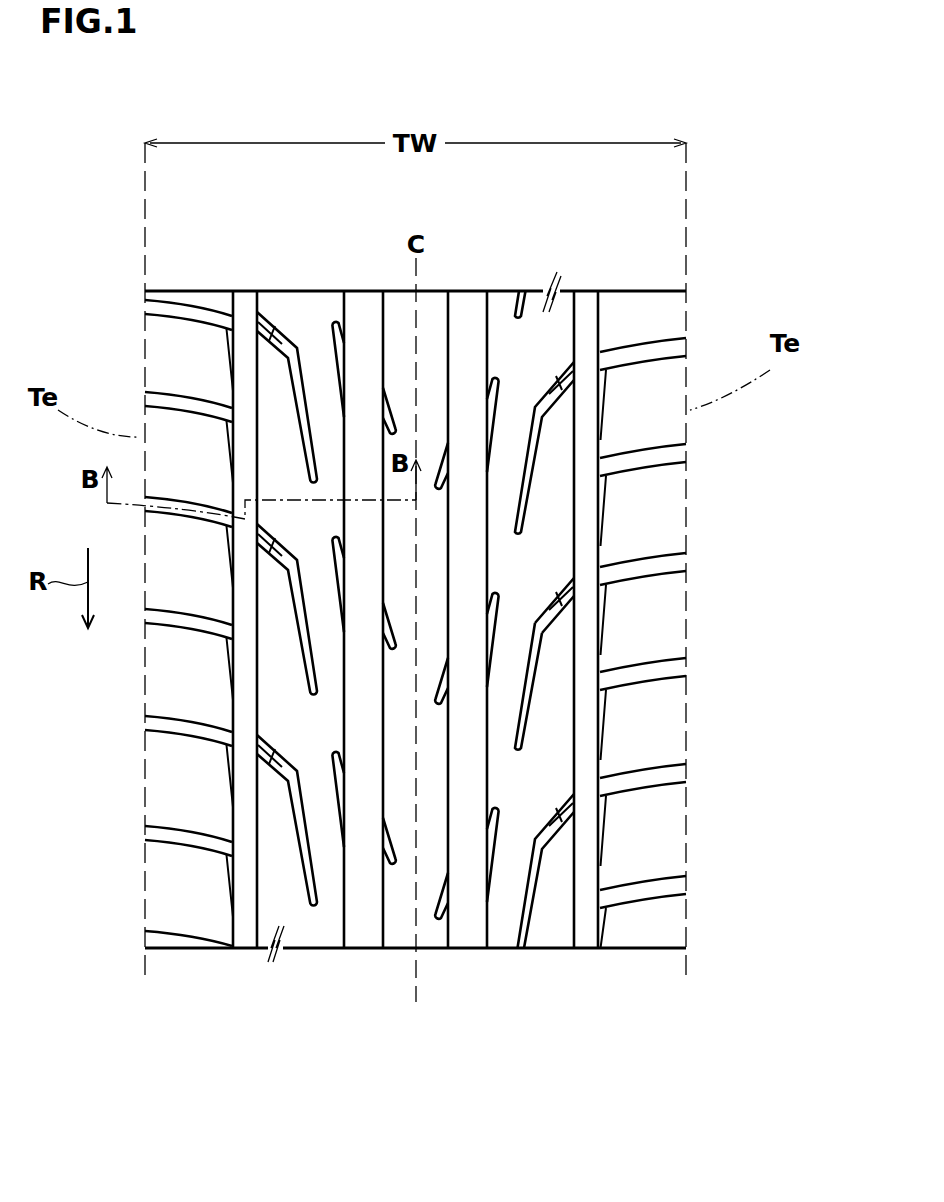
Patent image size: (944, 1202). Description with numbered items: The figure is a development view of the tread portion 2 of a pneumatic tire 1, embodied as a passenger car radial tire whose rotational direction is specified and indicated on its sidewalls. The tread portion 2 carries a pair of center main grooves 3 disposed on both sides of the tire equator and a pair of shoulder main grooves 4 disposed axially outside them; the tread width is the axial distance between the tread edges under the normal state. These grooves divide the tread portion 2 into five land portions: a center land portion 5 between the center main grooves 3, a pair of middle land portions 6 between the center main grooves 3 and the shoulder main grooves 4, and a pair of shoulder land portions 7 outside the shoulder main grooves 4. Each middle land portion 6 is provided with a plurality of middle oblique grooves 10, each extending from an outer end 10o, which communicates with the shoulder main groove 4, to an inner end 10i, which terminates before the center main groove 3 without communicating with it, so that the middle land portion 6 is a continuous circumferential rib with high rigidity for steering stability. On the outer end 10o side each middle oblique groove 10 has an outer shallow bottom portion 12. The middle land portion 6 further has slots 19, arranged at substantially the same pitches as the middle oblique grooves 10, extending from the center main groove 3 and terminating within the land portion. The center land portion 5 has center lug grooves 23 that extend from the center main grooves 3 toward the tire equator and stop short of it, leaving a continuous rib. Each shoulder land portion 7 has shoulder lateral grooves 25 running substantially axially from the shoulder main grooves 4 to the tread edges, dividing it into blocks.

The pneumatic tire 1 is at (550, 230).
The tread portion 2 is at (289, 230).
The center main grooves 3 is at (365, 300).
The shoulder main grooves 4 is at (248, 307).
The center land portion 5 is at (402, 937).
The middle land portions 6 is at (322, 942).
The shoulder land portions 7 is at (194, 915).
The middle oblique grooves 10 is at (419, 619).
The outer end 10o is at (563, 592).
The inner end 10i is at (518, 752).
The outer shallow bottom portion 12 is at (262, 336).
The slots 19 is at (325, 765).
The center lug grooves 23 is at (385, 860).
The shoulder lateral grooves 25 is at (183, 833).